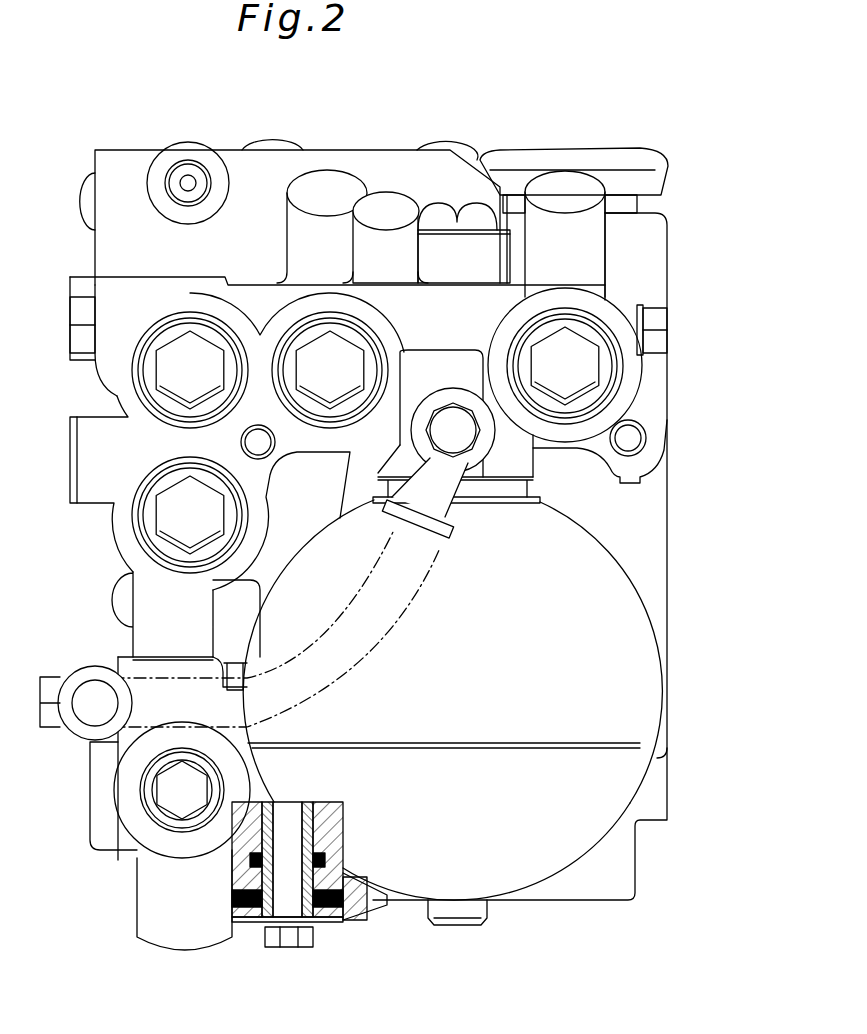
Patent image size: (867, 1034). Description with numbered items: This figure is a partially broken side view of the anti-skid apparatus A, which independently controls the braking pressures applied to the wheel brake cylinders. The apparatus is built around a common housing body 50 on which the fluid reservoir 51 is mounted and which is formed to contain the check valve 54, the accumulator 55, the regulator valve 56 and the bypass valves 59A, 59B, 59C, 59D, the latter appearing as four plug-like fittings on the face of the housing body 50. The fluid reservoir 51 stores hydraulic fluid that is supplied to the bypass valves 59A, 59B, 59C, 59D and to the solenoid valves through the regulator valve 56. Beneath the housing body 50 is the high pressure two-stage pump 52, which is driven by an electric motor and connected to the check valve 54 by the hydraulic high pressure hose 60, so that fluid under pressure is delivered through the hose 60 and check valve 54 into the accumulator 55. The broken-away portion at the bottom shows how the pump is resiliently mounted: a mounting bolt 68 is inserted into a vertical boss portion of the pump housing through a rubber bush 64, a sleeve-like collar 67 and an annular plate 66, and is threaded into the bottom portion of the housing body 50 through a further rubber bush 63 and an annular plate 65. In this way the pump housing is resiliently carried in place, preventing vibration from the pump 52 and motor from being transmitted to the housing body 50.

The anti-skid apparatus A is at (378, 148).
The housing body 50 is at (122, 552).
The fluid reservoir 51 is at (655, 262).
The high pressure two-stage pump 52 is at (150, 895).
The check valve 54 is at (458, 362).
The accumulator 55 is at (655, 662).
The regulator valve 56 is at (125, 165).
The bypass valve 59A is at (590, 372).
The bypass valve 59B is at (345, 370).
The bypass valve 59C is at (165, 375).
The bypass valve 59D is at (170, 520).
The hydraulic high pressure hose 60 is at (385, 622).
The rubber bush 63 is at (215, 657).
The rubber bush 64 is at (340, 910).
The annular plate 65 is at (234, 663).
The annular plate 66 is at (320, 922).
The sleeve-like collar 67 is at (262, 918).
The mounting bolt 68 is at (288, 947).